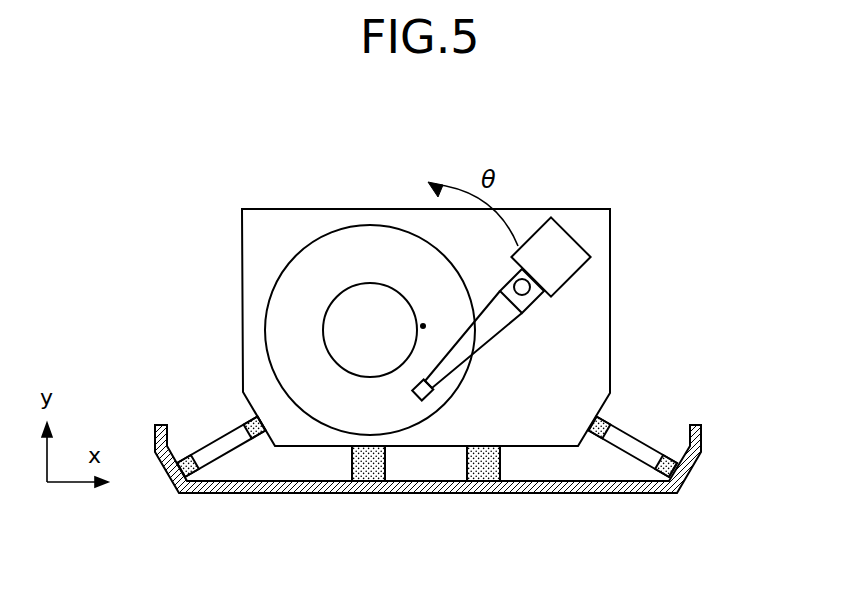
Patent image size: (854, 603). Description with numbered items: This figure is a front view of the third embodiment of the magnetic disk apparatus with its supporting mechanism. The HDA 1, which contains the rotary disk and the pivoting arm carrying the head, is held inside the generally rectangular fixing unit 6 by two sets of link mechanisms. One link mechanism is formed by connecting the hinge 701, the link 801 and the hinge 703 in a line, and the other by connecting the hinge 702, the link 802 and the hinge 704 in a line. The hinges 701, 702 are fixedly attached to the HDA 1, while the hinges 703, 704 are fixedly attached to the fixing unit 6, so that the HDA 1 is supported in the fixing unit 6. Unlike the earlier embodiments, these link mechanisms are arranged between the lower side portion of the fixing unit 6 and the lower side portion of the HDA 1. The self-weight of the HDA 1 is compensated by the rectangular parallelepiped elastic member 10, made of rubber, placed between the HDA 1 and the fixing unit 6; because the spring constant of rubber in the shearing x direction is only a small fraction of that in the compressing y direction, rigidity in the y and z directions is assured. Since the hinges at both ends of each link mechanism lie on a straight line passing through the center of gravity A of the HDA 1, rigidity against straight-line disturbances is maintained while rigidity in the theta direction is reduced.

The HDA 1 is at (555, 428).
The fixing unit 6 is at (285, 493).
The elastic member 10 is at (373, 481).
The hinge 701 is at (238, 417).
The hinge 702 is at (613, 420).
The hinge 703 is at (185, 458).
The hinge 704 is at (680, 453).
The link 801 is at (217, 440).
The link 802 is at (634, 433).